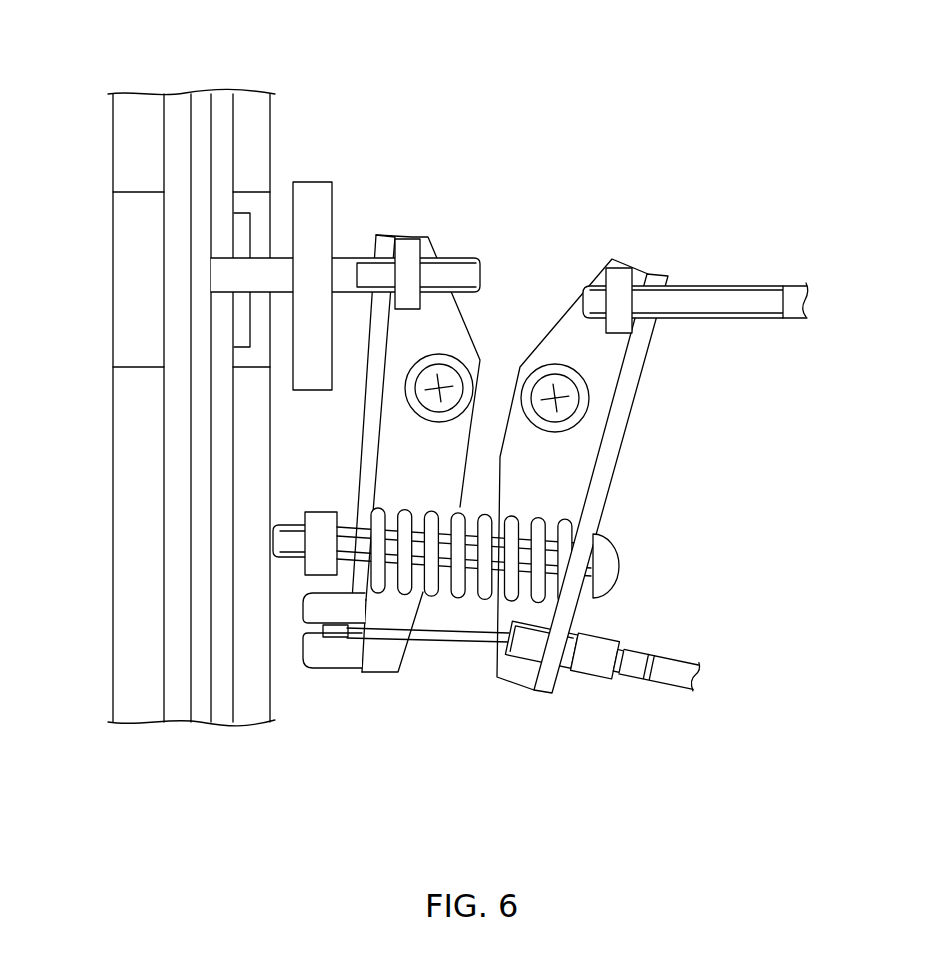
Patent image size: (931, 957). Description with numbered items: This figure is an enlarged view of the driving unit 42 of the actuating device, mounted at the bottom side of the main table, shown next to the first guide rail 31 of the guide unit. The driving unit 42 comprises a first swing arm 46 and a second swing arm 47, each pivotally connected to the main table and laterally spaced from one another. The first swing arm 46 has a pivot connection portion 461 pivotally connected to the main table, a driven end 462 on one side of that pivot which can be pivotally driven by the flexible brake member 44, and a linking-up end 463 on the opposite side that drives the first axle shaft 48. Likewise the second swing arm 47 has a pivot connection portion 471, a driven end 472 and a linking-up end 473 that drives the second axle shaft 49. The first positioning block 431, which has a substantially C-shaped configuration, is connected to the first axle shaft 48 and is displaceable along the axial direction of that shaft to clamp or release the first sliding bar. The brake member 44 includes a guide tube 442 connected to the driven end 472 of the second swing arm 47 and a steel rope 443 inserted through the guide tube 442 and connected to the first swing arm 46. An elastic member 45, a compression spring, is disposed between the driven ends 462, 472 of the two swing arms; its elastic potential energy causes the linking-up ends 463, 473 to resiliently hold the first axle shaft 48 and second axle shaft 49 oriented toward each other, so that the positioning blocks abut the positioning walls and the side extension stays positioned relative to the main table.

The first guide rail 31 is at (119, 164).
The first positioning block 431 is at (119, 300).
The driving unit 42 is at (377, 684).
The flexible brake member 44 is at (617, 704).
The guide tube 442 is at (668, 685).
The steel rope 443 is at (460, 642).
The elastic member 45 is at (545, 527).
The first swing arm 46 is at (402, 657).
The pivot connection portion 461 is at (452, 378).
The driven end 462 is at (362, 660).
The linking-up end 463 is at (386, 238).
The second swing arm 47 is at (520, 688).
The pivot connection portion 471 is at (570, 393).
The driven end 472 is at (557, 682).
The linking-up end 473 is at (657, 277).
The first axle shaft 48 is at (452, 258).
The second axle shaft 49 is at (752, 292).